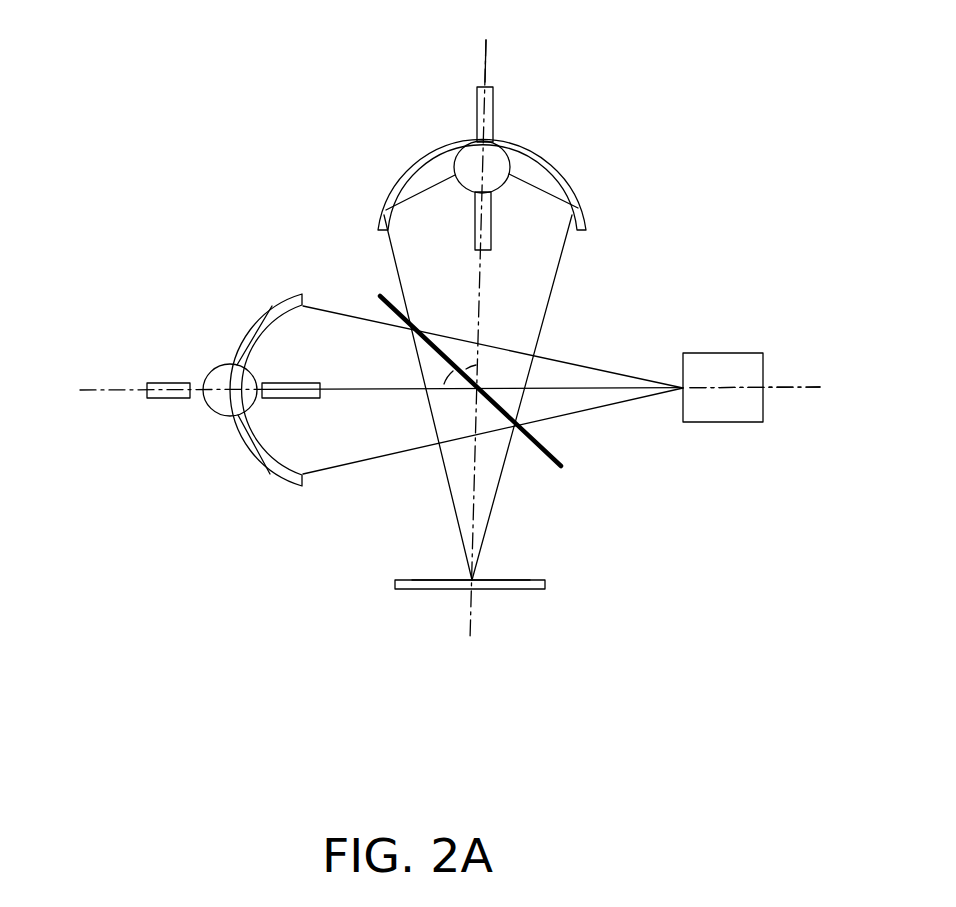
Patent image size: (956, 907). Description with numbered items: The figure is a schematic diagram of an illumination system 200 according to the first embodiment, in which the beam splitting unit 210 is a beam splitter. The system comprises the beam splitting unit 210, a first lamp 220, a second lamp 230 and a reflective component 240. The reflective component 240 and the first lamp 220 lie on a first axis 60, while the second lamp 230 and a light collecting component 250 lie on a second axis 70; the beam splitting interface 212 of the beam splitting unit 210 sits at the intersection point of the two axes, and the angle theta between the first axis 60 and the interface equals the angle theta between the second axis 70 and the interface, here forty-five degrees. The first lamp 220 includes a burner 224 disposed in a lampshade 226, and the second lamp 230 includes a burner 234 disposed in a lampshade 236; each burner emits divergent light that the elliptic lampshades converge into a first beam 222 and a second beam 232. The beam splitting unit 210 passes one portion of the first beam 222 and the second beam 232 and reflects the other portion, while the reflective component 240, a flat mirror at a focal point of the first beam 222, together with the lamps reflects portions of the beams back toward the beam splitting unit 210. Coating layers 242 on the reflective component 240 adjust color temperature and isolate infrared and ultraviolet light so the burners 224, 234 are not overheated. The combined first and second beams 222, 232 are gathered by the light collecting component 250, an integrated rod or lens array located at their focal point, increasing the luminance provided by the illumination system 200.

The first axis 60 is at (487, 58).
The second axis 70 is at (787, 387).
The illumination system 200 is at (429, 368).
The beam splitting unit 210 is at (543, 470).
The beam splitting interface 212 is at (556, 458).
The first lamp 220 is at (718, 95).
The first beam 222 is at (570, 268).
The burner 224 is at (498, 158).
The lampshade 226 is at (548, 137).
The second lamp 230 is at (97, 415).
The second beam 232 is at (340, 472).
The burner 234 is at (228, 401).
The lampshade 236 is at (208, 455).
The reflective component 240 is at (545, 585).
The coating layers 242 is at (412, 581).
The light collecting component 250 is at (721, 408).